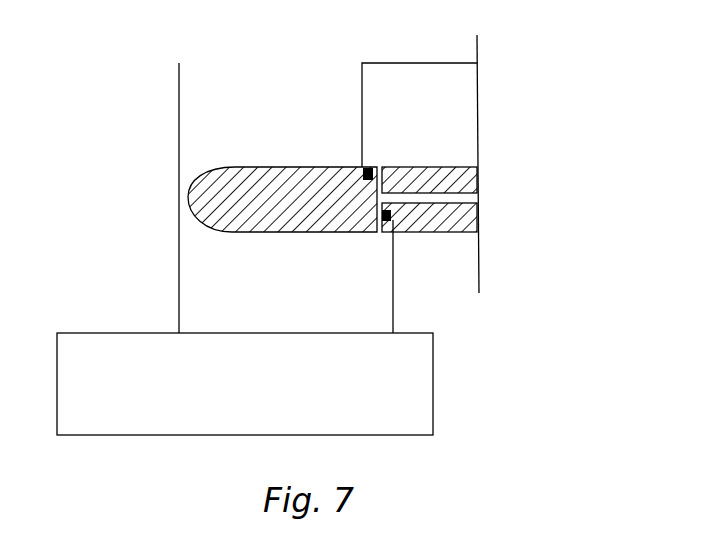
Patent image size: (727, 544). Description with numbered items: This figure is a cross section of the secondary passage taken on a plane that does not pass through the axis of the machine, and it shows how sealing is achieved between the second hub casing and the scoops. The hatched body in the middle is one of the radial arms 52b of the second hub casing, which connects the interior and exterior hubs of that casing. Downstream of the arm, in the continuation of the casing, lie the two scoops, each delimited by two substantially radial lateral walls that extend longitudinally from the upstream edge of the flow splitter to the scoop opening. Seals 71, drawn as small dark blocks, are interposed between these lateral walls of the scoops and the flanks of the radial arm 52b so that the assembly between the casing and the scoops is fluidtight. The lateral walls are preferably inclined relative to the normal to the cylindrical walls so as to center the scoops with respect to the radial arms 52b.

The radial arm 52b is at (215, 203).
The seal 71 is at (383, 217).